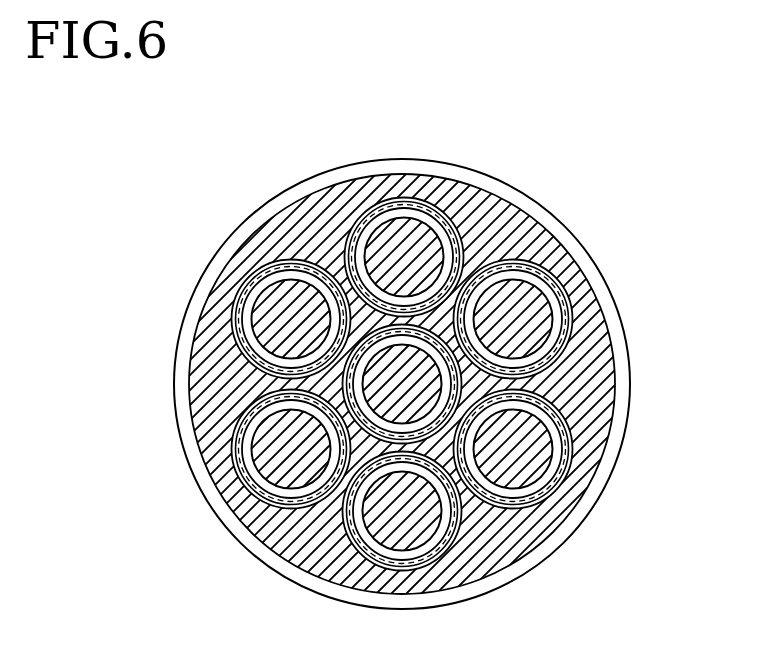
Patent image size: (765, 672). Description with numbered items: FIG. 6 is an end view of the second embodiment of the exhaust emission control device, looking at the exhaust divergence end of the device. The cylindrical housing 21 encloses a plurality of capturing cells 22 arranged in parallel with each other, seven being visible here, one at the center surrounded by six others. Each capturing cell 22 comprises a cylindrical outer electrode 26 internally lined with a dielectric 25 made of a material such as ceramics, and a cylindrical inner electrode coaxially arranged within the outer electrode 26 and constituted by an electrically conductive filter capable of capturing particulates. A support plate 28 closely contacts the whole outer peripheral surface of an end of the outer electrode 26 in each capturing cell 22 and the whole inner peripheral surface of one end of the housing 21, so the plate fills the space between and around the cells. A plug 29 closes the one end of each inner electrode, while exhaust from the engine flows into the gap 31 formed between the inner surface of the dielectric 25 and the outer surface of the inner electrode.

The cylindrical housing 21 is at (493, 600).
The capturing cell 22 is at (406, 376).
The dielectric 25 is at (367, 220).
The cylindrical outer electrode 26 is at (384, 201).
The support plate 28 is at (455, 588).
The plug 29 is at (428, 247).
The gap 31 is at (410, 212).